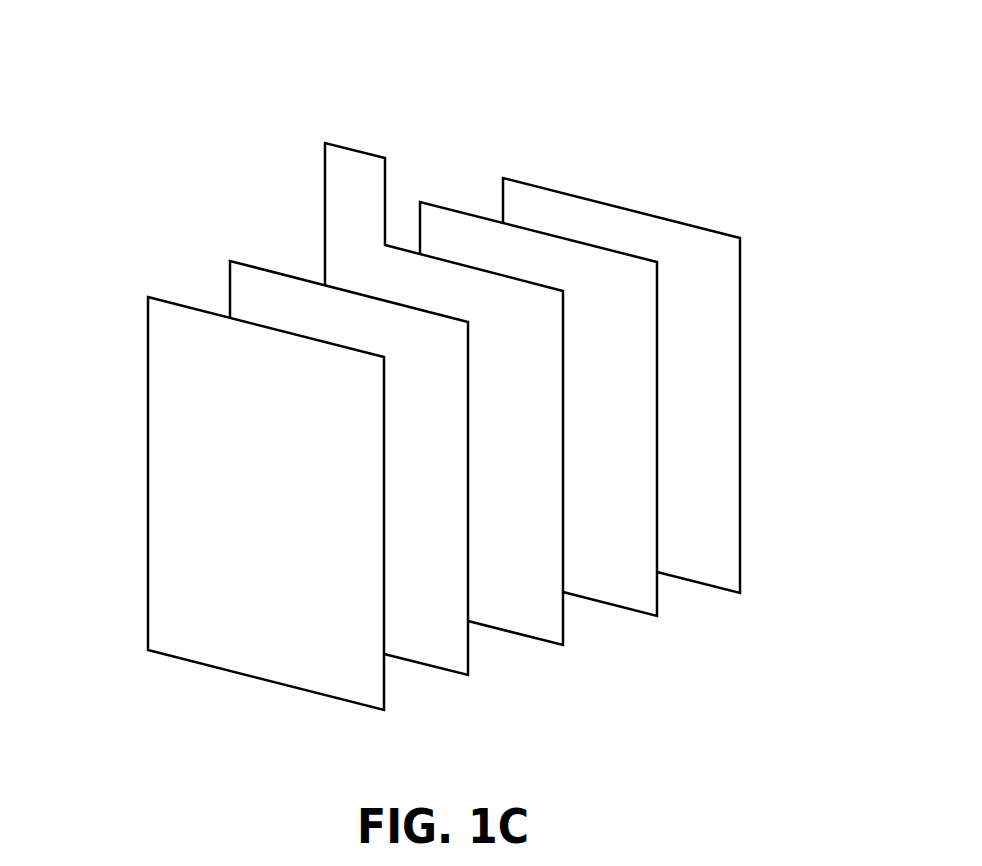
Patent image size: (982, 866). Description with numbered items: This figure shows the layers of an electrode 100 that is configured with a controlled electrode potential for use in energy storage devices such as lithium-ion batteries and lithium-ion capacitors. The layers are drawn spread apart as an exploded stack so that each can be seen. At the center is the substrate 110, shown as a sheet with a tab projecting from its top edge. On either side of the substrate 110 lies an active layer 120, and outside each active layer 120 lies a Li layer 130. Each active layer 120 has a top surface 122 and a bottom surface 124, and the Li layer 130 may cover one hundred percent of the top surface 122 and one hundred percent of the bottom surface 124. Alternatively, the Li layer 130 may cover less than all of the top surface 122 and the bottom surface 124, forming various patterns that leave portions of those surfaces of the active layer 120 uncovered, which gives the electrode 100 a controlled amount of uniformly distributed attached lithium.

The electrode 100 is at (118, 52).
The substrate 110 is at (325, 143).
The active layer 120 is at (230, 261).
The Li layer 130 is at (148, 297).
The top surface 122 is at (443, 645).
The bottom surface 124 is at (663, 592).